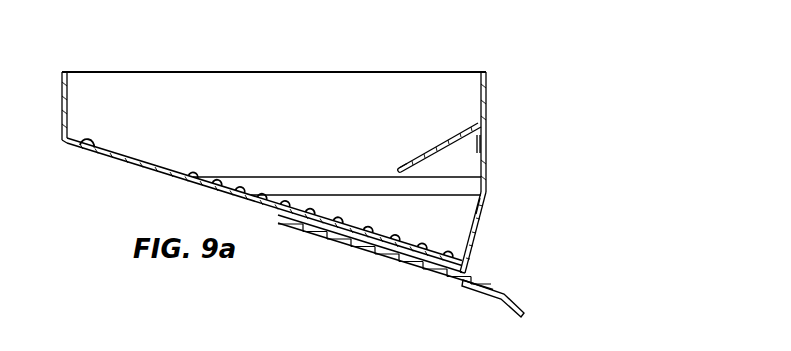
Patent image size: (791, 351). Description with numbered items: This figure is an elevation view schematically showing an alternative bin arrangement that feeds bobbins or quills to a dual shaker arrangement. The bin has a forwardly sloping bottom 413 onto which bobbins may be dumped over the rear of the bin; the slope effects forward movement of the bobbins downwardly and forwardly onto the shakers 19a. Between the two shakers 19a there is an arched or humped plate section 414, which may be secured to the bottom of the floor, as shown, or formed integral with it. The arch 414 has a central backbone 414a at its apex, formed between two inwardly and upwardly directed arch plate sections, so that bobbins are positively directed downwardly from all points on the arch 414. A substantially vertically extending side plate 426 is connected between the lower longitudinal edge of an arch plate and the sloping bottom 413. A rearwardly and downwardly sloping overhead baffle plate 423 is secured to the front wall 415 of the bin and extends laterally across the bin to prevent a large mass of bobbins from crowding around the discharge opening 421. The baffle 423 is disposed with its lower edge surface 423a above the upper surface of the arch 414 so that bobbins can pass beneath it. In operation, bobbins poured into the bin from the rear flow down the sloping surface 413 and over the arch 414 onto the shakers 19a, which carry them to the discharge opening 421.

The forwardly sloping bottom 413 is at (88, 149).
The arched or humped plate section 414 is at (296, 187).
The central backbone 414a is at (239, 177).
The overhead baffle plate 423 is at (449, 141).
The lower edge surface 423a is at (399, 171).
The front wall 415 is at (487, 128).
The side plate 426 is at (459, 226).
The discharge opening 421 is at (467, 259).
The shaker 19a is at (418, 266).